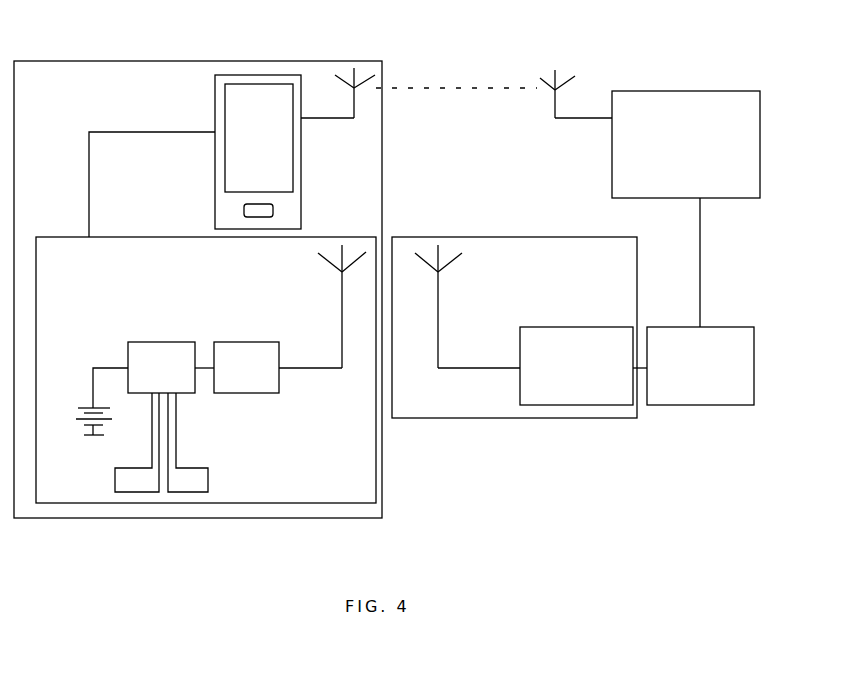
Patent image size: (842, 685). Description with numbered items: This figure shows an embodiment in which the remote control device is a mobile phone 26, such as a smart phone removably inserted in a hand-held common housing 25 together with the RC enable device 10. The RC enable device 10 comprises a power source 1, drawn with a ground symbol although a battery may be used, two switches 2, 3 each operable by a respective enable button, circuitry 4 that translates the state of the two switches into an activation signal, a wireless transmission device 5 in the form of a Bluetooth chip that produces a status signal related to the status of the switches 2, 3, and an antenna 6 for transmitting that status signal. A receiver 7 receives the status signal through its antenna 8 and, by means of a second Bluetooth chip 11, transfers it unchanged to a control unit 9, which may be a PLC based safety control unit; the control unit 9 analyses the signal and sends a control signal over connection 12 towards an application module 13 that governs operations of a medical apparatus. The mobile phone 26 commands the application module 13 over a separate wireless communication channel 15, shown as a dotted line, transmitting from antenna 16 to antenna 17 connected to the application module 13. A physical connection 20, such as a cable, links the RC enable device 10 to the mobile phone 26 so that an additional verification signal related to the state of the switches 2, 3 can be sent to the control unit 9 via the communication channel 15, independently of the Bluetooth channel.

The power source 1 is at (86, 403).
The switch 2 is at (144, 484).
The switch 3 is at (186, 490).
The circuitry 4 is at (171, 367).
The wireless transmission device 5 is at (246, 367).
The antenna 6 is at (320, 271).
The receiver 7 is at (447, 404).
The antenna 8 is at (452, 278).
The control unit 9 is at (693, 366).
The RC enable device 10 is at (366, 435).
The second Bluetooth chip 11 is at (576, 366).
The connection 12 is at (708, 264).
The application module 13 is at (686, 144).
The communication channel 15 is at (453, 84).
The antenna 16 is at (346, 64).
The antenna 17 is at (563, 63).
The physical connection 20 is at (89, 200).
The common housing 25 is at (75, 78).
The mobile phone 26 is at (282, 166).